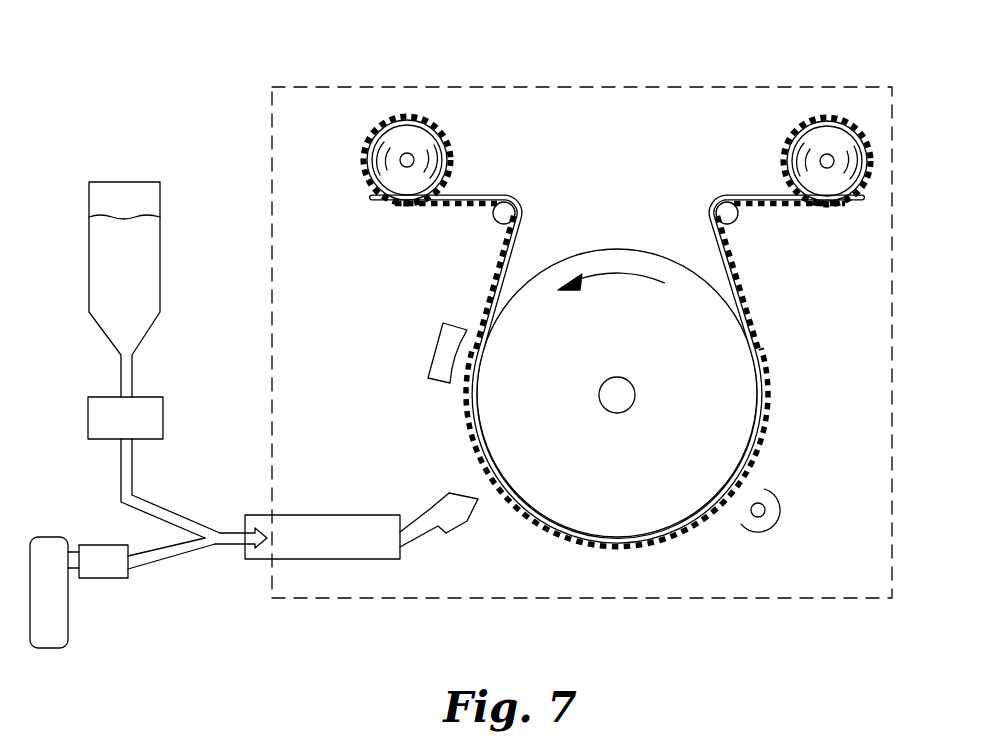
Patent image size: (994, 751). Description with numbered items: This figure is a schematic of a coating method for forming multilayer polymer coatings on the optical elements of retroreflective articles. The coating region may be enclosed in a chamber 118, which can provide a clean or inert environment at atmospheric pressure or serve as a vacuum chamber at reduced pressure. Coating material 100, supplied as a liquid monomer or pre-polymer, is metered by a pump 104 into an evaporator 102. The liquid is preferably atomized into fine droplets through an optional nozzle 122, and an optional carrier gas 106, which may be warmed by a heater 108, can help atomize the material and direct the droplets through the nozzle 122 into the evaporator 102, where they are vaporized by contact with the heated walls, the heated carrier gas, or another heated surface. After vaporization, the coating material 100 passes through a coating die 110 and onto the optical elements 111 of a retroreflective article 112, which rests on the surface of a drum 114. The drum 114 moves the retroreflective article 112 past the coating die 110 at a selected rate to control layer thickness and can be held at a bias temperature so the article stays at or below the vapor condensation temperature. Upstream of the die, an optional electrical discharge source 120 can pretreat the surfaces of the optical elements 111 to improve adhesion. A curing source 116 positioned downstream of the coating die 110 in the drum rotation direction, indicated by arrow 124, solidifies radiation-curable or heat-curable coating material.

The coating material 100 is at (152, 242).
The evaporator 102 is at (330, 520).
The pump 104 is at (157, 418).
The carrier gas 106 is at (50, 642).
The heater 108 is at (98, 552).
The coating die 110 is at (438, 497).
The optical elements 111 is at (545, 533).
The retroreflective article 112 is at (525, 217).
The drum 114 is at (745, 387).
The curing source 116 is at (767, 523).
The chamber 118 is at (413, 87).
The electrical discharge source 120 is at (442, 347).
The nozzle 122 is at (260, 550).
The arrow 124 is at (619, 273).